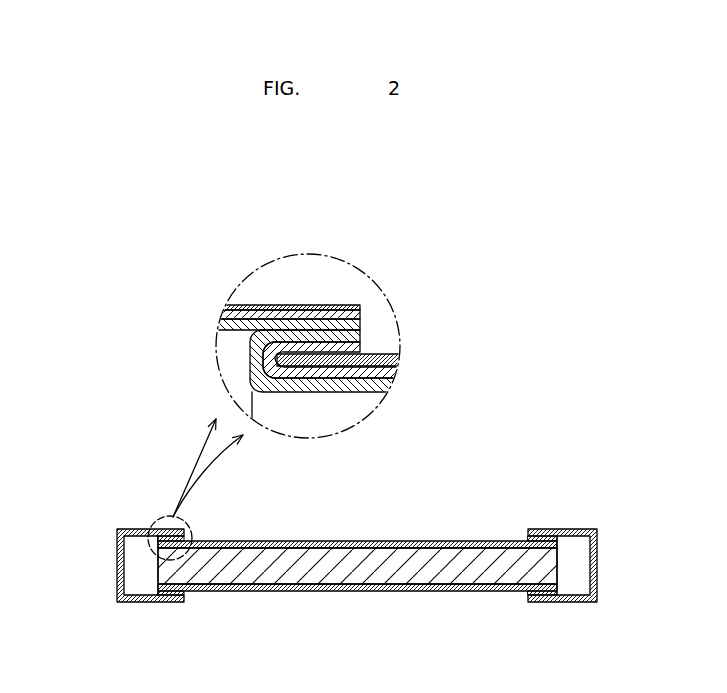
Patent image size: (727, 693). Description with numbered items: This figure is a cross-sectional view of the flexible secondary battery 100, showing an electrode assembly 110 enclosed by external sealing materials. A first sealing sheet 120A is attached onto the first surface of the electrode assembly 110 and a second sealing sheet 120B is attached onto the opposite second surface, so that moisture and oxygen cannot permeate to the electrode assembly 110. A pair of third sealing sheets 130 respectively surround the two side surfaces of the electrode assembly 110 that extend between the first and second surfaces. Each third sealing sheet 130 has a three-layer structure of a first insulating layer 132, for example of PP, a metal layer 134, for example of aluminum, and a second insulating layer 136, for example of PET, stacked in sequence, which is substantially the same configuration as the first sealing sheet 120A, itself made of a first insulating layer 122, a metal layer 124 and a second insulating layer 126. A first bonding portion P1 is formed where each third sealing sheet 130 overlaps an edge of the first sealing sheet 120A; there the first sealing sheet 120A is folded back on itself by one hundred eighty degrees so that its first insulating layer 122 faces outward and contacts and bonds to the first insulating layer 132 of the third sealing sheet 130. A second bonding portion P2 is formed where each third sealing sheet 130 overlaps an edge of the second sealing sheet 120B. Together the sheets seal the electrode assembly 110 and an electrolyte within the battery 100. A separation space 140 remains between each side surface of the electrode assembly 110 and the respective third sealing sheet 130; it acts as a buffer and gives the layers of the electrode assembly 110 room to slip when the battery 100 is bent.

The flexible secondary battery 100 is at (559, 416).
The electrode assembly 110 is at (274, 566).
The first sealing sheet 120A is at (403, 541).
The second sealing sheet 120B is at (403, 591).
The first insulating layer 122 is at (325, 361).
The metal layer 124 is at (331, 360).
The second insulating layer 126 is at (362, 337).
The third sealing sheet 130 is at (349, 376).
The first insulating layer 132 is at (282, 324).
The metal layer 134 is at (282, 314).
The second insulating layer 136 is at (282, 307).
The separation space 140 is at (141, 557).
The first bonding portion P1 is at (172, 516).
The second bonding portion P2 is at (183, 605).